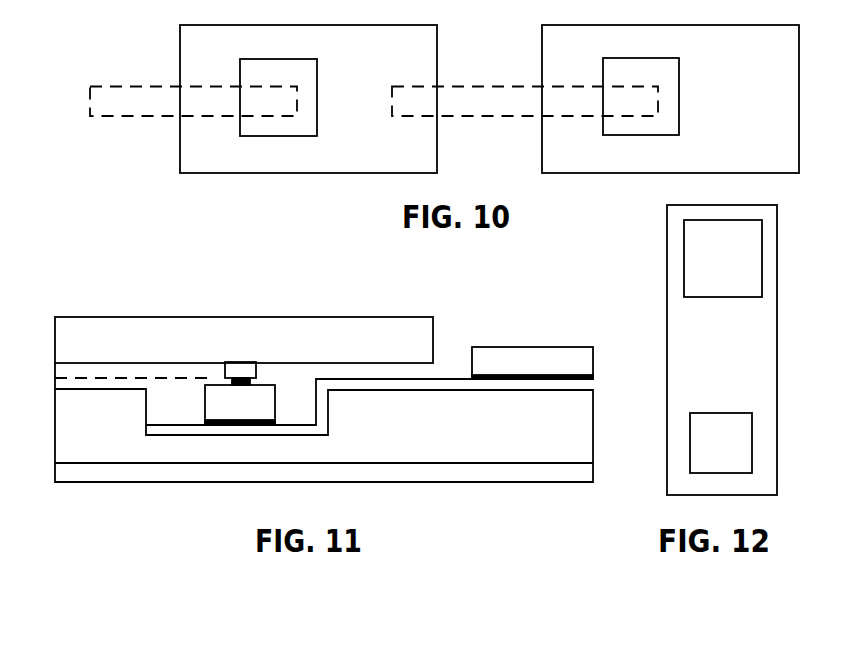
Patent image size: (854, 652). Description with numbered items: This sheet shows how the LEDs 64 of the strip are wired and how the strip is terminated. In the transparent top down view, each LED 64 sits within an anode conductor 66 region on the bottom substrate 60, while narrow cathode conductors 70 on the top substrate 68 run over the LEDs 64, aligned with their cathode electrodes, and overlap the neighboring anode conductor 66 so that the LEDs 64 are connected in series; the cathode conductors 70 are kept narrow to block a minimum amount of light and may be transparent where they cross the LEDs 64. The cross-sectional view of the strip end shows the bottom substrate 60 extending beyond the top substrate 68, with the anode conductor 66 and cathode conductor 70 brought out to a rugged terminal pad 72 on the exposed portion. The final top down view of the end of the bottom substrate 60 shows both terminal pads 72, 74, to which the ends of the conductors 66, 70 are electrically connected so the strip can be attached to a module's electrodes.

In FIG. 11, the bottom substrate 60 is at (529, 439).
In FIG. 12, the bottom substrate 60 is at (734, 359).
In FIG. 10, the LED 64 is at (305, 75).
In FIG. 10, the anode conductor 66 is at (427, 42).
In FIG. 11, the anode conductor 66 is at (380, 385).
In FIG. 11, the top substrate 68 is at (408, 351).
In FIG. 10, the cathode conductor 70 is at (483, 108).
In FIG. 11, the cathode conductor 70 is at (113, 370).
In FIG. 11, the terminal pad 72 is at (545, 358).
In FIG. 12, the terminal pad 72 is at (734, 266).
In FIG. 12, the terminal pad 74 is at (722, 427).